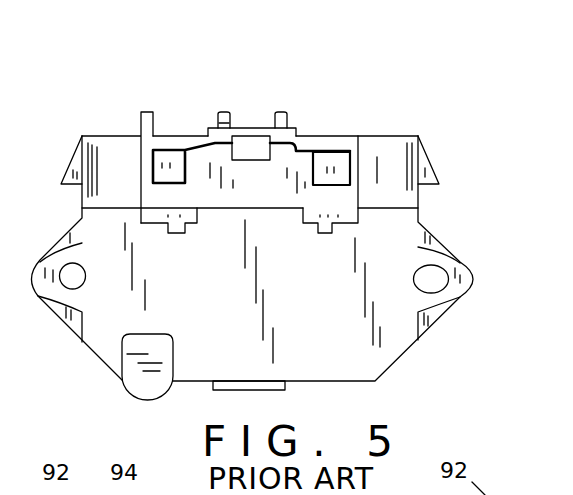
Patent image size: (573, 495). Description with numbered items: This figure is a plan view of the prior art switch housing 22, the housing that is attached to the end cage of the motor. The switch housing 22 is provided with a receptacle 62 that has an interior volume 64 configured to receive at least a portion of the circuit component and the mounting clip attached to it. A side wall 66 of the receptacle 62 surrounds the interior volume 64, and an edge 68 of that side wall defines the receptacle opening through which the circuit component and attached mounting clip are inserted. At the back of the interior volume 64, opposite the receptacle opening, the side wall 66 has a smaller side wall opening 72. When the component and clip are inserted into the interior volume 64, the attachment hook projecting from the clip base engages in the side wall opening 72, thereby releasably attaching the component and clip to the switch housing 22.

The switch housing 22 is at (408, 252).
The receptacle 62 is at (363, 170).
The interior volume 64 is at (328, 194).
The side wall 66 is at (140, 175).
The edge 68 is at (145, 198).
The side wall opening 72 is at (252, 123).